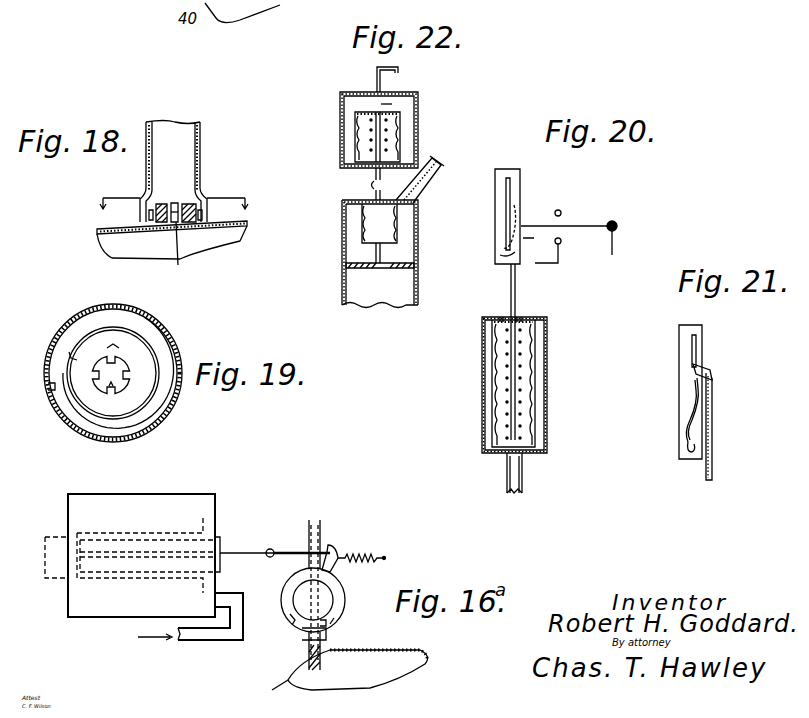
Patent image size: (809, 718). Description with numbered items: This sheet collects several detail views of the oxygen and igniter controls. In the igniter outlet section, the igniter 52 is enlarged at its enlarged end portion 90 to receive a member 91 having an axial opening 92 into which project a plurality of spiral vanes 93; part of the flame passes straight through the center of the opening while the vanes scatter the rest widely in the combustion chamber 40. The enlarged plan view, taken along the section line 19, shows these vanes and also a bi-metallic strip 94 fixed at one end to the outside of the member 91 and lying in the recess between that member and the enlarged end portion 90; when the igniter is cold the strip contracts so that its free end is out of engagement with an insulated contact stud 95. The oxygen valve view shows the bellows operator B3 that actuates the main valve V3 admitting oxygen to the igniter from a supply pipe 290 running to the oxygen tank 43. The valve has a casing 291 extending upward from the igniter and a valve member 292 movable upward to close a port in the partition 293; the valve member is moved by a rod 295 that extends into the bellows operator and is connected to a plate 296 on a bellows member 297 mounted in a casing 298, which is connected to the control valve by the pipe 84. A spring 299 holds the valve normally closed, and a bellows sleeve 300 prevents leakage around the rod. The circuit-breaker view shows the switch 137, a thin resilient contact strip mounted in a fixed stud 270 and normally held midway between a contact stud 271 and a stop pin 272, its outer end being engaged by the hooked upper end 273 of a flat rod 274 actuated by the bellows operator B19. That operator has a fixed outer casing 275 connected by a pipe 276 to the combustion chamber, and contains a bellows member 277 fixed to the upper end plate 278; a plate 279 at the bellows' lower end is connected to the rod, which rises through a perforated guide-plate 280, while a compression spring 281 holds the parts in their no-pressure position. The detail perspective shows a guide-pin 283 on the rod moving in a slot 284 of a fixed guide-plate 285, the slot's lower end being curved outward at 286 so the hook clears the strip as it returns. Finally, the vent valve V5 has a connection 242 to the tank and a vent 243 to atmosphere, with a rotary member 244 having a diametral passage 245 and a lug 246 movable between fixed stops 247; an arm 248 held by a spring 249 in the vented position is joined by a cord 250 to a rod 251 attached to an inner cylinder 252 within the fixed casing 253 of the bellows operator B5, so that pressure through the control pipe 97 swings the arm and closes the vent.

In FIG. 18, the igniter 52 is at (202, 152).
In FIG. 22, the igniter 52 is at (342, 300).
In FIG. 18, the section line 19 is at (175, 193).
In FIG. 18, the enlarged end portion of the igniter 90 is at (142, 210).
In FIG. 19, the enlarged end portion of the igniter 90 is at (66, 330).
In FIG. 18, the combustion chamber 40 is at (241, 236).
In FIG. 18, the member 91 is at (161, 224).
In FIG. 19, the member 91 is at (133, 352).
In FIG. 18, the spiral vanes 93 is at (174, 212).
In FIG. 19, the spiral vanes 93 is at (99, 385).
In FIG. 18, the insulated contact stud 95 is at (149, 226).
In FIG. 19, the insulated contact stud 95 is at (48, 385).
In FIG. 18, the bi-metallic strip 94 is at (201, 226).
In FIG. 19, the bi-metallic strip 94 is at (113, 345).
In FIG. 18, the axial opening 92 is at (188, 252).
In FIG. 19, the axial opening 92 is at (113, 388).
In FIG. 22, the casing 298 is at (340, 108).
In FIG. 22, the pipe 84 is at (377, 79).
In FIG. 22, the plate 296 is at (392, 108).
In FIG. 22, the bellows member 297 is at (358, 146).
In FIG. 22, the spring 299 is at (386, 124).
In FIG. 22, the bellows operator B3 is at (418, 130).
In FIG. 22, the rod 295 is at (372, 185).
In FIG. 22, the casing 291 is at (342, 245).
In FIG. 22, the supply pipe 290 is at (440, 164).
In FIG. 22, the bellows sleeve 300 is at (362, 216).
In FIG. 22, the main valve V3 is at (418, 226).
In FIG. 22, the partition 293 is at (346, 264).
In FIG. 22, the valve member 292 is at (372, 270).
In FIG. 20, the fixed guide-plate 285 is at (502, 169).
In FIG. 21, the fixed guide-plate 285 is at (680, 347).
In FIG. 20, the slot 284 is at (505, 190).
In FIG. 21, the slot 284 is at (698, 340).
In FIG. 20, the guide-pin 283 is at (510, 226).
In FIG. 21, the guide-pin 283 is at (697, 383).
In FIG. 20, the outward curve of slot 286 is at (505, 254).
In FIG. 21, the outward curve of slot 286 is at (687, 447).
In FIG. 20, the switch 137 is at (586, 222).
In FIG. 20, the stop pin 272 is at (557, 211).
In FIG. 20, the hooked upper end 273 is at (555, 241).
In FIG. 21, the hooked upper end 273 is at (714, 372).
In FIG. 20, the contact stud 271 is at (562, 243).
In FIG. 20, the fixed stud 270 is at (618, 229).
In FIG. 20, the flat rod 274 is at (516, 291).
In FIG. 21, the flat rod 274 is at (713, 427).
In FIG. 20, the fixed outer casing 275 is at (547, 415).
In FIG. 20, the bellows operator B19 is at (547, 357).
In FIG. 20, the bellows member 277 is at (492, 410).
In FIG. 20, the compression spring 281 is at (505, 380).
In FIG. 20, the upper end plate 278 is at (488, 316).
In FIG. 20, the perforated guide-plate 280 is at (525, 316).
In FIG. 20, the pipe 276 is at (522, 485).
In FIG. 20, the plate 279 is at (496, 452).
In FIG. 16A, the fixed casing 253 is at (170, 486).
In FIG. 16A, the bellows operator B5 is at (215, 498).
In FIG. 16A, the inner cylinder 252 is at (100, 534).
In FIG. 16A, the pressure or control pipe 97 is at (210, 640).
In FIG. 16A, the rod 251 is at (238, 552).
In FIG. 16A, the cord 250 is at (290, 548).
In FIG. 16A, the automatic vent valve V5 is at (273, 582).
In FIG. 16A, the rotary member 244 is at (330, 596).
In FIG. 16A, the diametral passage 245 is at (328, 598).
In FIG. 16A, the vent 243 is at (320, 522).
In FIG. 16A, the arm 248 is at (334, 548).
In FIG. 16A, the spring 249 is at (372, 549).
In FIG. 16A, the fixed stops 247 is at (290, 614).
In FIG. 16A, the lug 246 is at (300, 632).
In FIG. 16A, the connection 242 is at (346, 650).
In FIG. 16A, the oxygen tank 43 is at (268, 690).